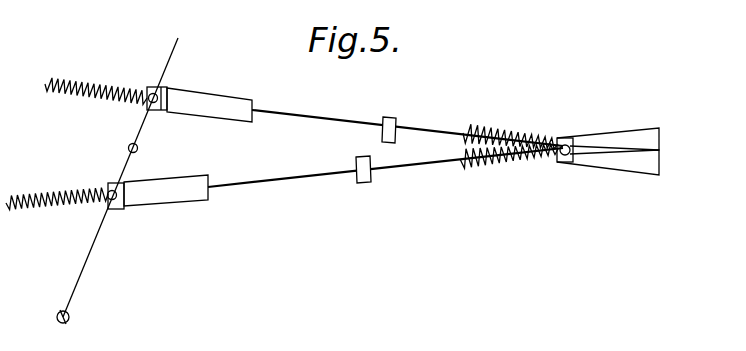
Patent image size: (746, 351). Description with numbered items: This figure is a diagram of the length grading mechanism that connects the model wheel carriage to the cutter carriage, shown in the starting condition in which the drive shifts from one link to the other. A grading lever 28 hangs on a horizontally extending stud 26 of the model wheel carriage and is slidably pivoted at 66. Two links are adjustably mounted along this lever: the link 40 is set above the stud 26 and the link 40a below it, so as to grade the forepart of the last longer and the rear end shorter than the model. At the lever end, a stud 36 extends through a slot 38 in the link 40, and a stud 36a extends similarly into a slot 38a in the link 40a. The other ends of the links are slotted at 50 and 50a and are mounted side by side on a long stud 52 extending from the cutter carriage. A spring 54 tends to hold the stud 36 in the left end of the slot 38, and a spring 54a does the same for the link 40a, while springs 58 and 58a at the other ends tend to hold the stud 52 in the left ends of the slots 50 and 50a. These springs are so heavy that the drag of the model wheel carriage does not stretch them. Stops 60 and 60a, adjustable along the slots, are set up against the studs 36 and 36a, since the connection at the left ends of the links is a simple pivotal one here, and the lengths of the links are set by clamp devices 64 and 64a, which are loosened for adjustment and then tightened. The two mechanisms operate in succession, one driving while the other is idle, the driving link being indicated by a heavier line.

The stud 26 is at (140, 148).
The grading lever 28 is at (92, 253).
The stud 36 is at (151, 90).
The stud 36a is at (108, 184).
The slot 38 is at (203, 100).
The slot 38a is at (192, 193).
The link 40 is at (307, 115).
The link 40a is at (295, 180).
The slot 50 is at (640, 162).
The slot 50a is at (640, 135).
The stud 52 is at (567, 145).
The spring 54 is at (73, 93).
The spring 54a is at (55, 215).
The spring 58 is at (493, 133).
The spring 58a is at (497, 163).
The stop 60 is at (163, 88).
The stop 60a is at (122, 200).
The clamp device 64 is at (391, 123).
The clamp device 64a is at (367, 177).
The pivot 66 is at (68, 318).